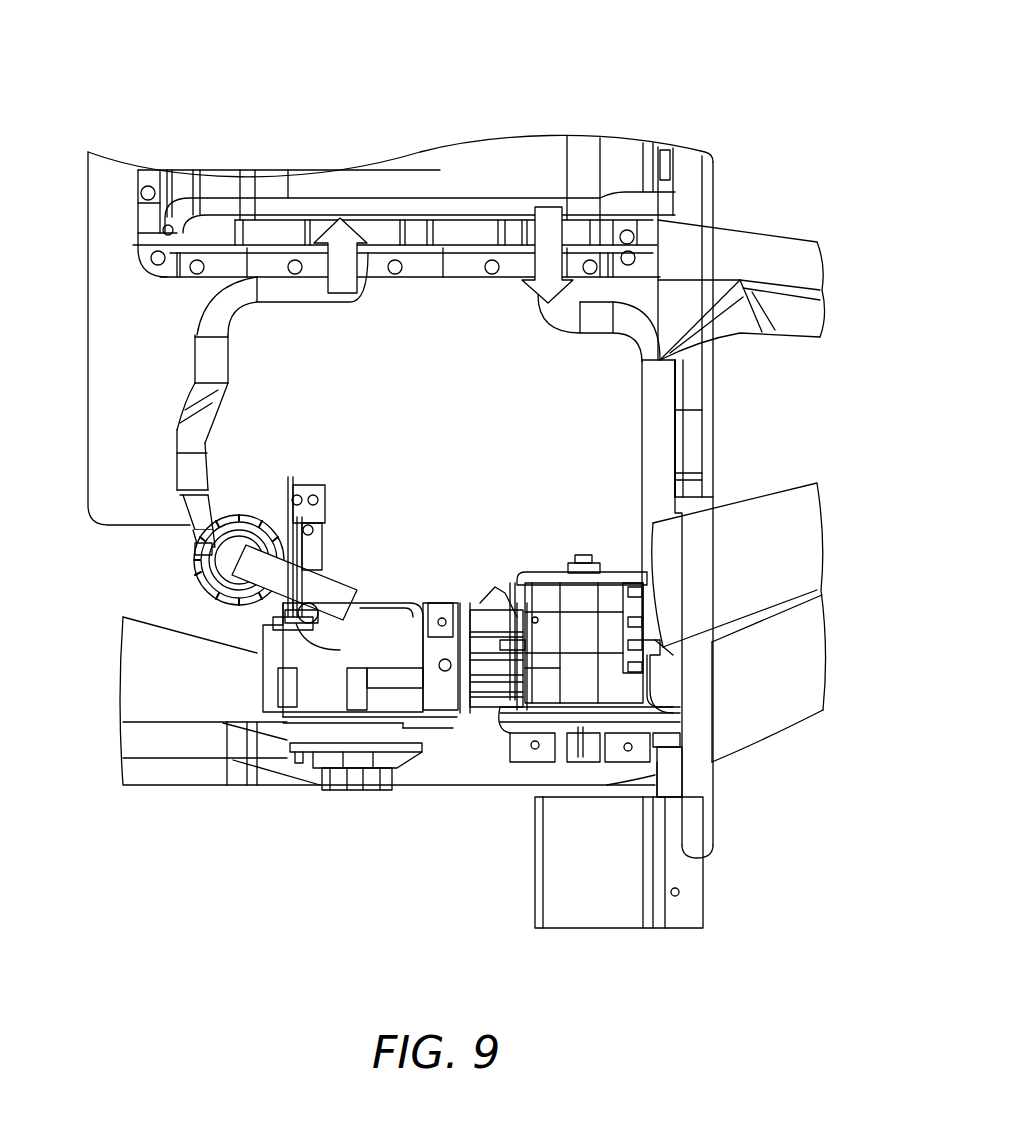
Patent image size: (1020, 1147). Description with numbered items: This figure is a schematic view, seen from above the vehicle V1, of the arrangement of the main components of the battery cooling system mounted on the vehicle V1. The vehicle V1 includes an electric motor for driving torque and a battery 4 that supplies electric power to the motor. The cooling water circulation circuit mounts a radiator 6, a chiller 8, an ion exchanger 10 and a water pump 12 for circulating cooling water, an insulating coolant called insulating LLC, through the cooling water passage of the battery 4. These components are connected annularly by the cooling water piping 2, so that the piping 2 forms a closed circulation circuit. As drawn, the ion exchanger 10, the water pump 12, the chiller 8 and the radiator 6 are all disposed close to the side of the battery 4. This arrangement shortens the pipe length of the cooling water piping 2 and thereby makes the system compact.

The cooling water piping 2 is at (203, 367).
The battery 4 is at (432, 180).
The radiator 6 is at (613, 875).
The chiller 8 is at (580, 633).
The ion exchanger 10 is at (313, 675).
The water pump 12 is at (193, 572).
The vehicle V1 is at (693, 118).